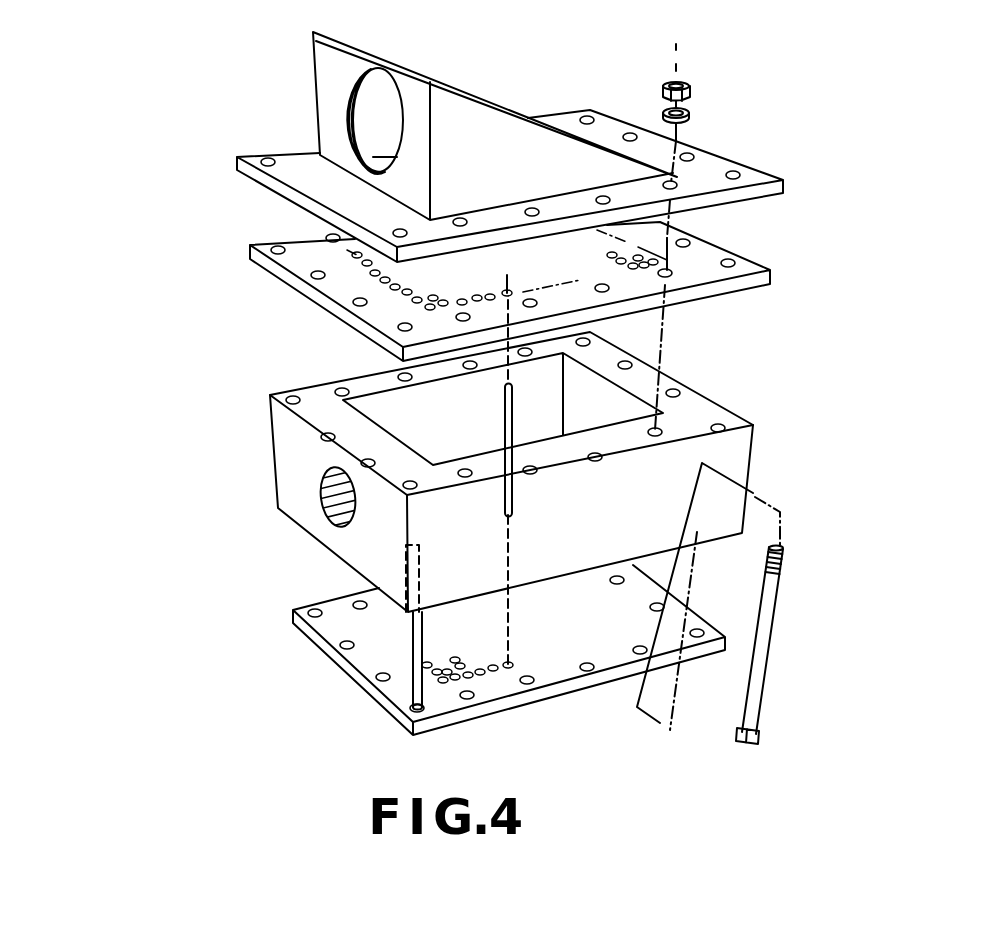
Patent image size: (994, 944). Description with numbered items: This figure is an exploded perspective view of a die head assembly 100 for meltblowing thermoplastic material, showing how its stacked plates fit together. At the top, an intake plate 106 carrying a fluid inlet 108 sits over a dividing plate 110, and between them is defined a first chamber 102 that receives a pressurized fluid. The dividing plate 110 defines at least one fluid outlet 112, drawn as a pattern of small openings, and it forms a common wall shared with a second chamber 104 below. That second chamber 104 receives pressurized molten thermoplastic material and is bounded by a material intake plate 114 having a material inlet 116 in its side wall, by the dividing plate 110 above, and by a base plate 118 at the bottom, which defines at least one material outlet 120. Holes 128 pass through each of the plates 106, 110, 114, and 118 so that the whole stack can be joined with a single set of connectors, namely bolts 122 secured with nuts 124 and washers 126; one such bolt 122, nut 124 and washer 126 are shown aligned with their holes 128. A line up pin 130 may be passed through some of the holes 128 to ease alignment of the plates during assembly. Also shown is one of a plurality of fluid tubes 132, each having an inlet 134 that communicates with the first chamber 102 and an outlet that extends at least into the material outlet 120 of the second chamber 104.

The die head assembly 100 is at (197, 394).
The first chamber 102 is at (378, 120).
The second chamber 104 is at (471, 454).
The intake plate 106 is at (293, 153).
The fluid inlet 108 is at (352, 103).
The dividing plate 110 is at (260, 258).
The fluid outlet 112 is at (370, 272).
The material intake plate 114 is at (288, 452).
The material inlet 116 is at (333, 505).
The base plate 118 is at (325, 627).
The material outlet 120 is at (433, 683).
The bolt 122 is at (775, 590).
The nut 124 is at (692, 88).
The washer 126 is at (690, 115).
The hole 128 is at (400, 233).
The line up pin 130 is at (407, 633).
The fluid tube 132 is at (528, 429).
The inlet 134 is at (508, 381).